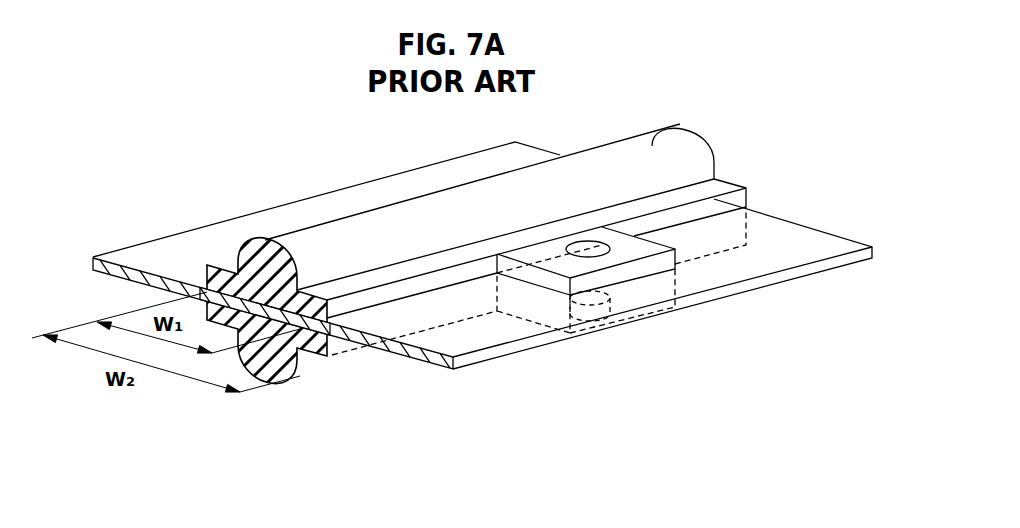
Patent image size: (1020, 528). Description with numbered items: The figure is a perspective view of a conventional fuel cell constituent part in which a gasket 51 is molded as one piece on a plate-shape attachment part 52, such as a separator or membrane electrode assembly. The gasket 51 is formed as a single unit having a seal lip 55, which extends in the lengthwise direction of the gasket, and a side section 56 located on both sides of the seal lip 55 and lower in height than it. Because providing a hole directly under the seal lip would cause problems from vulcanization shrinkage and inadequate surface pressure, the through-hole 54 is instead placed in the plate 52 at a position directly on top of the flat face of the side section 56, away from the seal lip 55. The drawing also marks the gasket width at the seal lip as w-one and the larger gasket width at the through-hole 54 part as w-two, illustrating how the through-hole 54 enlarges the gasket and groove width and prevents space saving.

The gasket 51 is at (655, 140).
The plate-shape attachment part 52 is at (783, 237).
The through-hole 54 is at (630, 323).
The seal lip 55 is at (257, 240).
The side section 56 is at (208, 266).